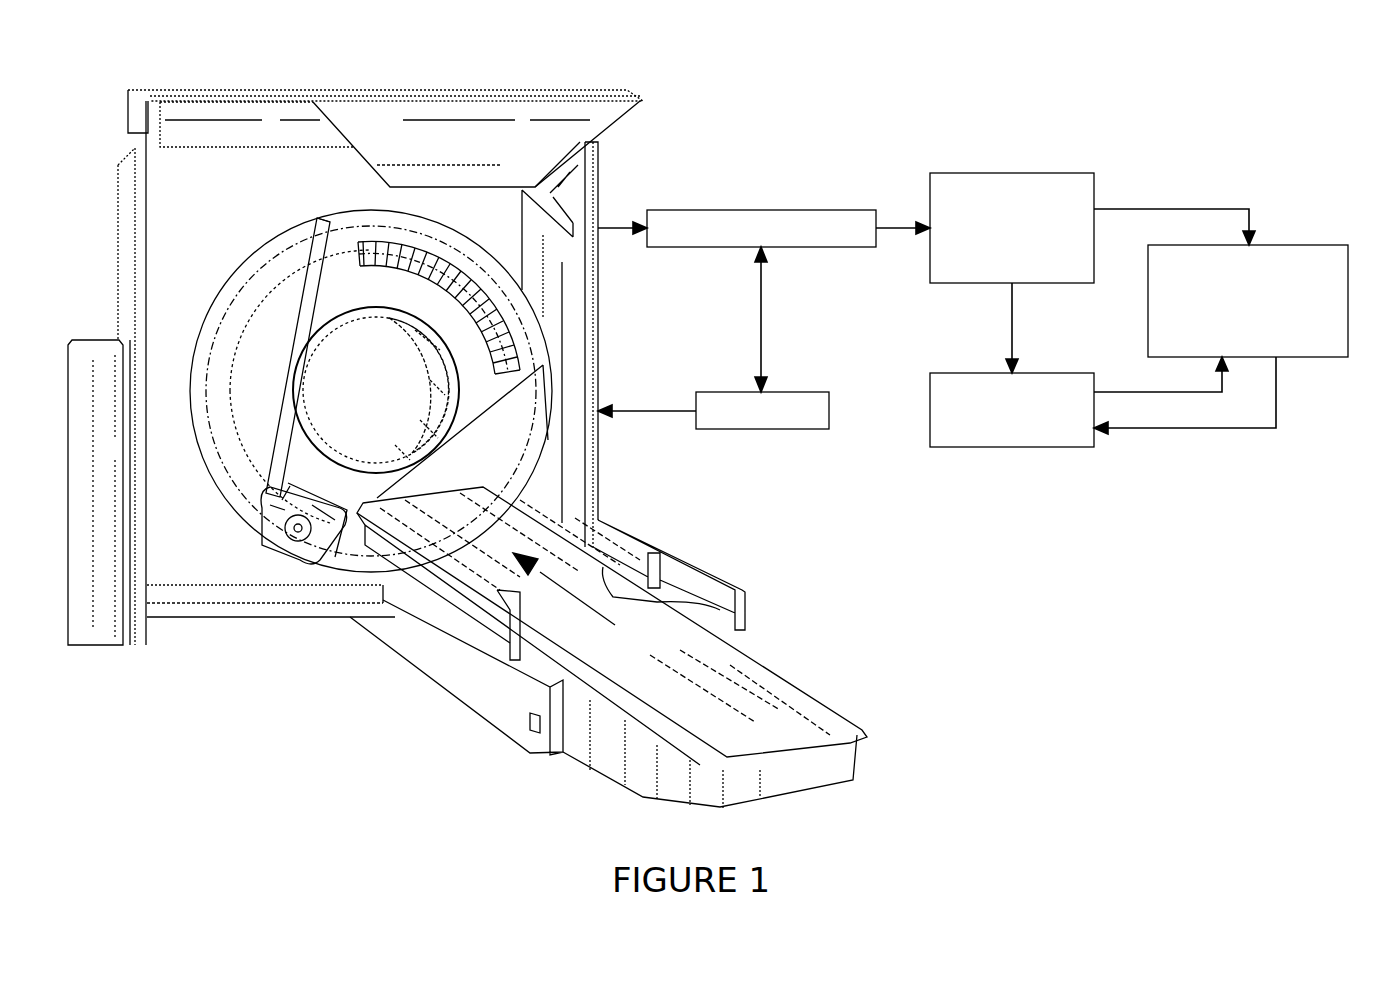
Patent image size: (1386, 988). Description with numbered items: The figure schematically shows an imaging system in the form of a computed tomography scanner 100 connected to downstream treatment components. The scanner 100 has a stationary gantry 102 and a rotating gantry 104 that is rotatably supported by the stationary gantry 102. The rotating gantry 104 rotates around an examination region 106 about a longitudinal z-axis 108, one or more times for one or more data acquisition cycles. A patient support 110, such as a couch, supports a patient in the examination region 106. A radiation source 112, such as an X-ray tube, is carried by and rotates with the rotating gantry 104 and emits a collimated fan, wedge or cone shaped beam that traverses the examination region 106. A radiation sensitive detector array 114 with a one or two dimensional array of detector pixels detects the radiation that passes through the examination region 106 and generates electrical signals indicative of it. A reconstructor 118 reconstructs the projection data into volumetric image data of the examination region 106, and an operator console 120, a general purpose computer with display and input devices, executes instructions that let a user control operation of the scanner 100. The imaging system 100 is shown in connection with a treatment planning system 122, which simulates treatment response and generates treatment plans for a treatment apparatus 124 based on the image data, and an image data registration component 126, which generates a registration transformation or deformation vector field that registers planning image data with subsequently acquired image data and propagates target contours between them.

The computed tomography scanner 100 is at (876, 99).
The stationary gantry 102 is at (140, 222).
The rotating gantry 104 is at (330, 288).
The examination region 106 is at (378, 402).
The z-axis 108 is at (657, 645).
The patient support 110 is at (793, 703).
The radiation source 112 is at (293, 537).
The radiation sensitive detector array 114 is at (493, 317).
The reconstructor 118 is at (765, 210).
The operator console 120 is at (757, 429).
The treatment planning system 122 is at (1012, 173).
The treatment apparatus 124 is at (1012, 447).
The image data registration component 126 is at (1277, 245).